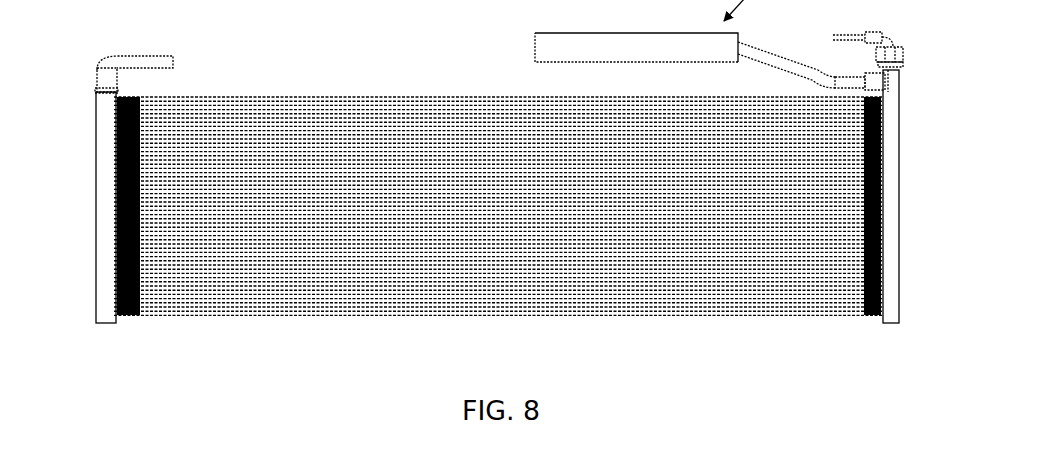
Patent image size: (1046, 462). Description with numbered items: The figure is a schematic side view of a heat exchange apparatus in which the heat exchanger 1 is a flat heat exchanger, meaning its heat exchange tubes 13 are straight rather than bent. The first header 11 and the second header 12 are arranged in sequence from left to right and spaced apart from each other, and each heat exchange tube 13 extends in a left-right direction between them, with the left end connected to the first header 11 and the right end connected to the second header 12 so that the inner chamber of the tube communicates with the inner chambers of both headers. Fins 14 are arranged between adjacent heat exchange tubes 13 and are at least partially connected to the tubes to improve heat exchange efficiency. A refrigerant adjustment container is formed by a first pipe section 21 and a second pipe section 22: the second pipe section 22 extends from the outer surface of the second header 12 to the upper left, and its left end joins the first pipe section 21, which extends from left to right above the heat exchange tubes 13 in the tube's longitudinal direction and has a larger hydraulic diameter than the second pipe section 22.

The heat exchanger 1 is at (470, 324).
The first header 11 is at (102, 125).
The second header 12 is at (892, 117).
The heat exchange tube 13 is at (350, 102).
The fin 14 is at (150, 105).
The first pipe section 21 is at (628, 43).
The second pipe section 22 is at (777, 63).